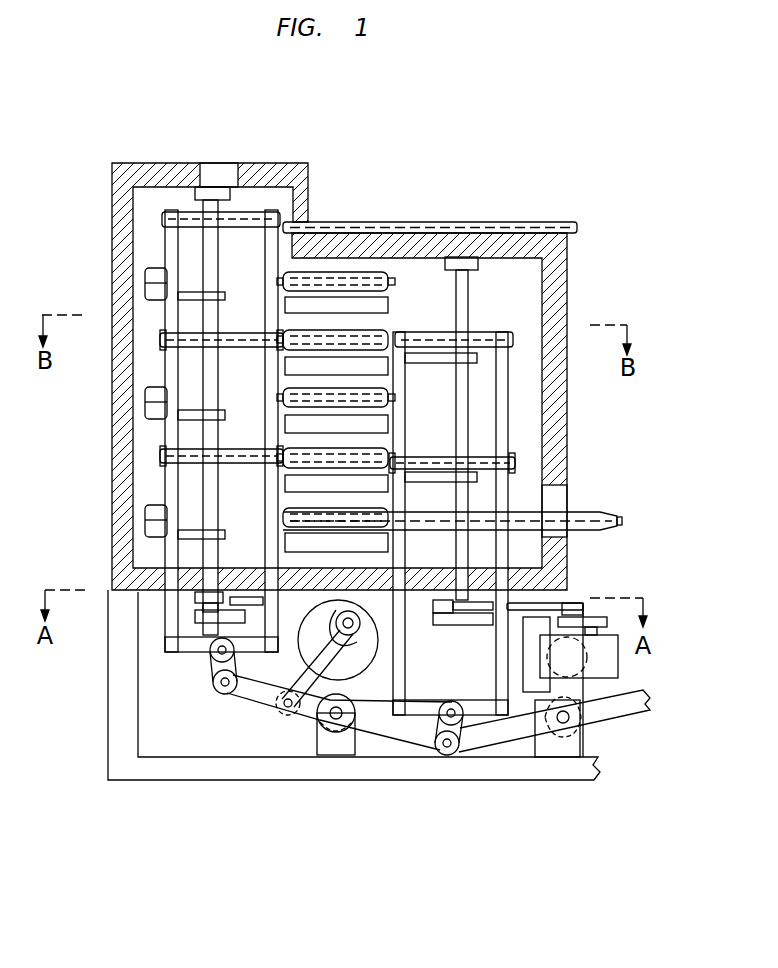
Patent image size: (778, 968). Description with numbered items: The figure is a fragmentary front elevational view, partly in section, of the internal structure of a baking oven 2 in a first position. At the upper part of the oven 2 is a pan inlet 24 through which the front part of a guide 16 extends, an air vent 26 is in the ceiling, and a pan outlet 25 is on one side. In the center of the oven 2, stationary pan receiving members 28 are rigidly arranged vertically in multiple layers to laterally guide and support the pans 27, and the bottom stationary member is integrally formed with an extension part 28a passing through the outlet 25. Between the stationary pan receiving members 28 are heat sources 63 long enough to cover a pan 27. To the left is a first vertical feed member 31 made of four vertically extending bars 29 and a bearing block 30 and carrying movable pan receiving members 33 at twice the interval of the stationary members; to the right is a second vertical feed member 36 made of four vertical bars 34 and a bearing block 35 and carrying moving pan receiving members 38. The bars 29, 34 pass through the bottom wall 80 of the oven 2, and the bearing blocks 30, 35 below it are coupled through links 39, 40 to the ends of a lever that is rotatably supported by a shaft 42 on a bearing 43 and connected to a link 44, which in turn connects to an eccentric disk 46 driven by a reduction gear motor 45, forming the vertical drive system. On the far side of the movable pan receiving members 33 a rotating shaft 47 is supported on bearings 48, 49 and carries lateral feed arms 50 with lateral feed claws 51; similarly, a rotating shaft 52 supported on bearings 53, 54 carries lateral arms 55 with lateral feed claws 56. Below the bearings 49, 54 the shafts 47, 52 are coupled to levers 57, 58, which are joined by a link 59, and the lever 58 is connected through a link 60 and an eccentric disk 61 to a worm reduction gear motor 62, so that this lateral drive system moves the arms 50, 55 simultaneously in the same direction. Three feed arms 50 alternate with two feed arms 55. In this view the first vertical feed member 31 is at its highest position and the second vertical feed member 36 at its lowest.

The oven 2 is at (165, 158).
The guide 16 is at (517, 222).
The pan inlet 24 is at (305, 215).
The pan outlet 25 is at (555, 512).
The air vent 26 is at (235, 172).
The pan 27 is at (394, 282).
The stationary pan receiving member 28 is at (352, 272).
The extension part 28a is at (600, 531).
The vertically extending bar 29 is at (165, 362).
The bearing block 30 is at (180, 650).
The first vertical feed member 31 is at (155, 242).
The movable pan receiving member 33 is at (243, 228).
The vertical bar 34 is at (502, 418).
The bearing block 35 is at (487, 710).
The second vertical feed member 36 is at (522, 380).
The moving pan receiving member 38 is at (490, 335).
The link 39 is at (214, 678).
The link 40 is at (455, 752).
The shaft 42 is at (334, 720).
The bearing 43 is at (342, 660).
The link 44 is at (267, 703).
The reduction gear motor 45 is at (360, 662).
The eccentric disk 46 is at (333, 717).
The rotating shaft 47 is at (205, 488).
The bearing 48 is at (204, 184).
The bearing 49 is at (202, 598).
The lateral feed arm 50 is at (215, 298).
The lateral feed claw 51 is at (147, 282).
The rotating shaft 52 is at (462, 295).
The bearing 53 is at (462, 265).
The bearing 54 is at (473, 610).
The lateral arm 55 is at (428, 366).
The lateral feed claw 56 is at (395, 468).
The lever 57 is at (202, 617).
The lever 58 is at (455, 626).
The link 59 is at (420, 612).
The link 60 is at (560, 602).
The eccentric disk 61 is at (550, 642).
The worm reduction gear motor 62 is at (612, 665).
The heat source 63 is at (388, 308).
The bottom wall 80 is at (145, 567).